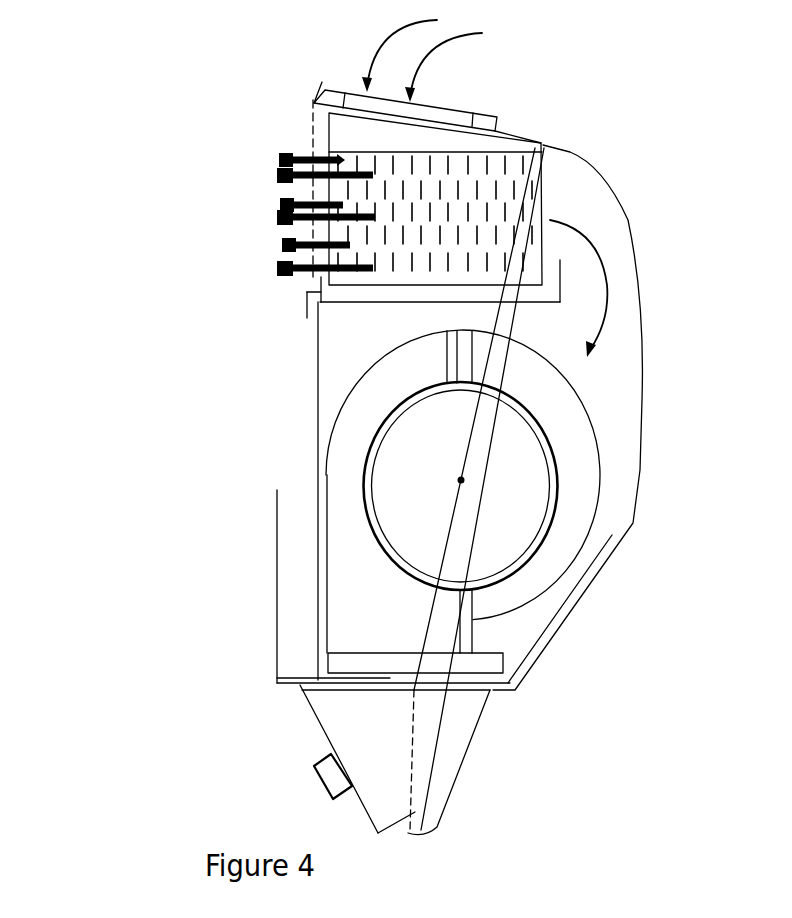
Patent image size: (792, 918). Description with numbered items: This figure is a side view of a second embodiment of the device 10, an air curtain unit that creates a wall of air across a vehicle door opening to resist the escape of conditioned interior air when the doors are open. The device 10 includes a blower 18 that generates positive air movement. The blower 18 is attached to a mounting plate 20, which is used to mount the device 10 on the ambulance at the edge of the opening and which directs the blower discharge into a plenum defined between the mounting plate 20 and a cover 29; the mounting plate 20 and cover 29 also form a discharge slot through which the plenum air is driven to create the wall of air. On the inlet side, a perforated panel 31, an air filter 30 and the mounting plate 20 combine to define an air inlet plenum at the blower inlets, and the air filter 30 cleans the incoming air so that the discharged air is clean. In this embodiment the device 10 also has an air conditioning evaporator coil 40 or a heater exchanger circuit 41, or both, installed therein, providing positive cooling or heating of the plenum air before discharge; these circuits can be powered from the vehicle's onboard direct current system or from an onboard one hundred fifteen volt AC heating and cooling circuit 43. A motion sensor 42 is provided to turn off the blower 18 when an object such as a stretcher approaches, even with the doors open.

The device 10 is at (268, 690).
The blower 18 is at (570, 567).
The mounting plate 20 is at (460, 683).
The cover 29 is at (630, 534).
The air filter 30 is at (511, 99).
The perforated panel 31 is at (310, 387).
The air conditioning evaporator coil 40 is at (393, 147).
The heater exchanger circuit 41 is at (279, 161).
The motion sensor 42 is at (314, 776).
The 115 volt AC heating and cooling circuit 43 is at (278, 265).